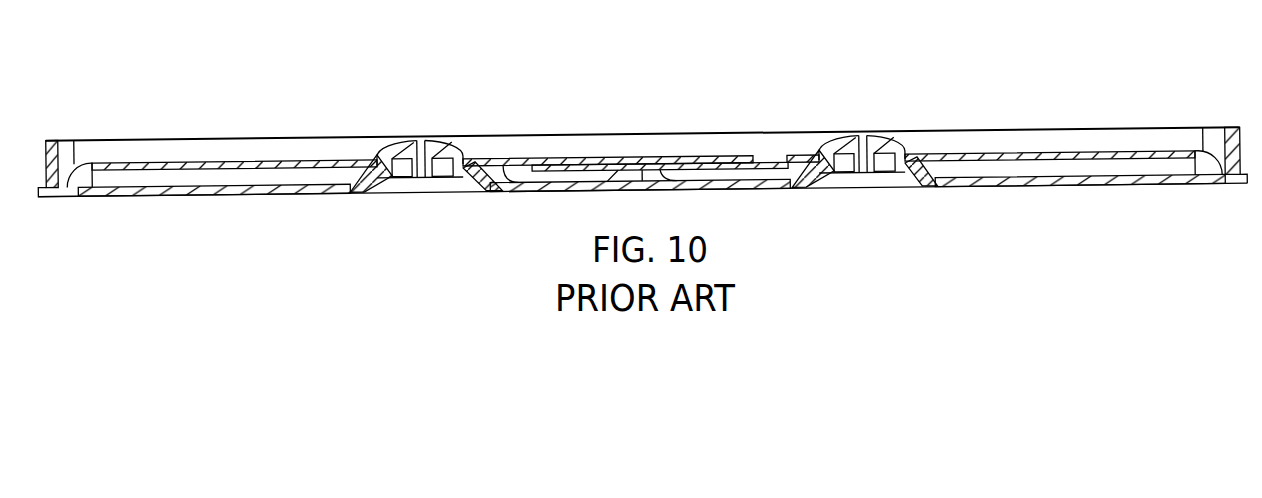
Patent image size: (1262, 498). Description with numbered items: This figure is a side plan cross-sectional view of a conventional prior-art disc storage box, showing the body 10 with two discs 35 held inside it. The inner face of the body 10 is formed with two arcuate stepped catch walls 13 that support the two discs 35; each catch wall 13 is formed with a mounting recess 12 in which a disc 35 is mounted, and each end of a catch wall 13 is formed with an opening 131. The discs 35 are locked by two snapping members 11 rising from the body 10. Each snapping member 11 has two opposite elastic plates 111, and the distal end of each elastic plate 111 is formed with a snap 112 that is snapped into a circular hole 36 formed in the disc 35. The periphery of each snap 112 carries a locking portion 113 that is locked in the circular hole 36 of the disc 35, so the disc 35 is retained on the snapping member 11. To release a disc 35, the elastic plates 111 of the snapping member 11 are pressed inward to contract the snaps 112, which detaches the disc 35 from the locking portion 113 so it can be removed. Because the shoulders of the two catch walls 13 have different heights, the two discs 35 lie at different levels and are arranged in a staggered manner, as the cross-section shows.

The body 10 is at (656, 133).
The snapping member 11 is at (426, 110).
The mounting recess 12 is at (193, 172).
The arcuate stepped catch wall 13 is at (75, 162).
The disc 35 is at (280, 156).
The circular hole 36 is at (394, 144).
The elastic plate 111 is at (830, 160).
The snap 112 is at (870, 156).
The locking portion 113 is at (835, 94).
The opening 131 is at (564, 168).